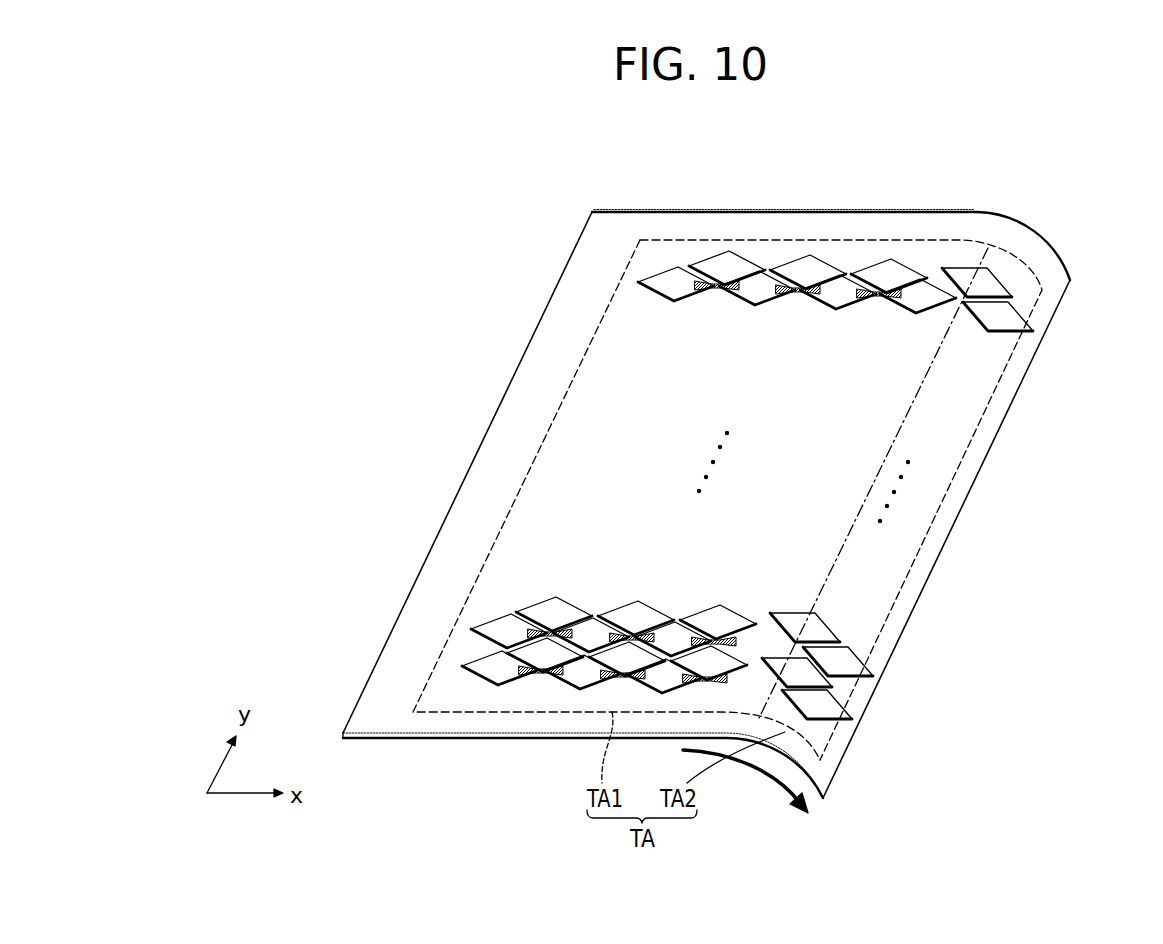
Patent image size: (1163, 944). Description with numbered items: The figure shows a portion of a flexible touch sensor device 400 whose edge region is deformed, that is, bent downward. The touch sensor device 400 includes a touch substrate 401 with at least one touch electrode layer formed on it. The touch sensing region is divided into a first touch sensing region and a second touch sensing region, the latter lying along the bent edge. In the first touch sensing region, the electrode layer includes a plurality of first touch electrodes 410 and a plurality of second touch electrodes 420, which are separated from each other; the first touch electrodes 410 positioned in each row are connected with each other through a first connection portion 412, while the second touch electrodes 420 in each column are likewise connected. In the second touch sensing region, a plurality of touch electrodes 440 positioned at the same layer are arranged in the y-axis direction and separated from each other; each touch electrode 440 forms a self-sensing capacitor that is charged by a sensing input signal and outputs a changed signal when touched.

The touch sensor device 400 is at (898, 181).
The touch substrate 401 is at (540, 382).
The first touch electrodes 410 is at (668, 280).
The first connection portion 412 is at (714, 290).
The second touch electrodes 420 is at (717, 266).
The touch electrodes 440 is at (1008, 319).